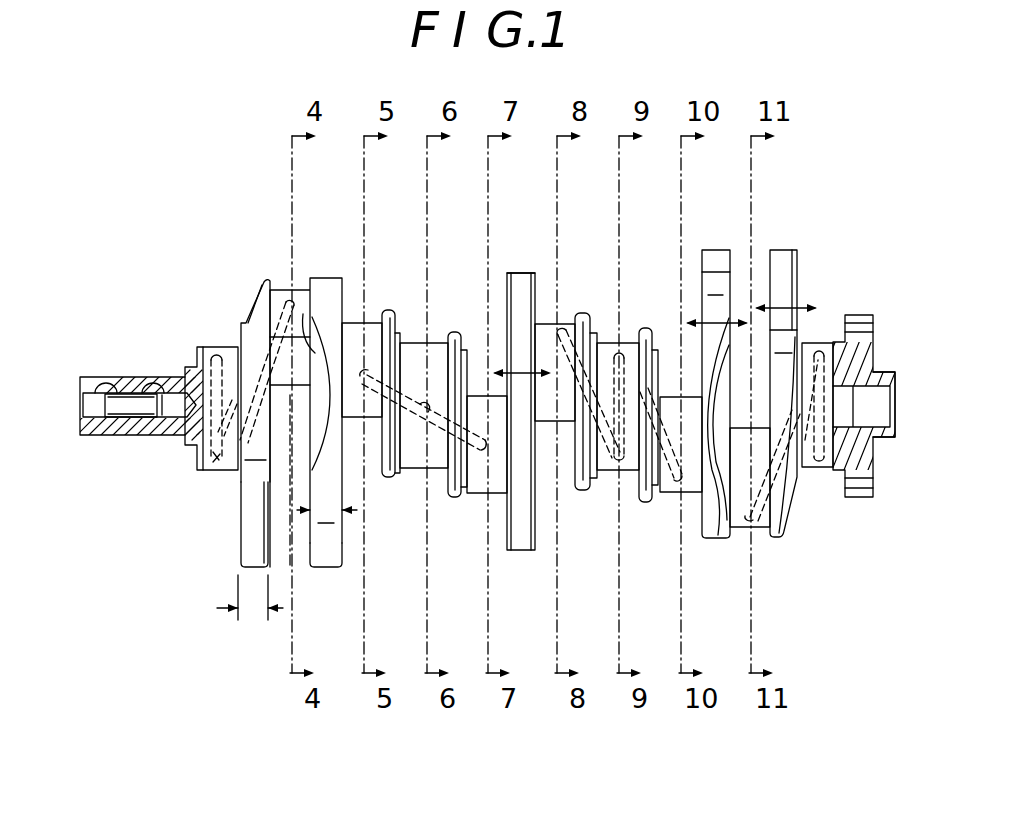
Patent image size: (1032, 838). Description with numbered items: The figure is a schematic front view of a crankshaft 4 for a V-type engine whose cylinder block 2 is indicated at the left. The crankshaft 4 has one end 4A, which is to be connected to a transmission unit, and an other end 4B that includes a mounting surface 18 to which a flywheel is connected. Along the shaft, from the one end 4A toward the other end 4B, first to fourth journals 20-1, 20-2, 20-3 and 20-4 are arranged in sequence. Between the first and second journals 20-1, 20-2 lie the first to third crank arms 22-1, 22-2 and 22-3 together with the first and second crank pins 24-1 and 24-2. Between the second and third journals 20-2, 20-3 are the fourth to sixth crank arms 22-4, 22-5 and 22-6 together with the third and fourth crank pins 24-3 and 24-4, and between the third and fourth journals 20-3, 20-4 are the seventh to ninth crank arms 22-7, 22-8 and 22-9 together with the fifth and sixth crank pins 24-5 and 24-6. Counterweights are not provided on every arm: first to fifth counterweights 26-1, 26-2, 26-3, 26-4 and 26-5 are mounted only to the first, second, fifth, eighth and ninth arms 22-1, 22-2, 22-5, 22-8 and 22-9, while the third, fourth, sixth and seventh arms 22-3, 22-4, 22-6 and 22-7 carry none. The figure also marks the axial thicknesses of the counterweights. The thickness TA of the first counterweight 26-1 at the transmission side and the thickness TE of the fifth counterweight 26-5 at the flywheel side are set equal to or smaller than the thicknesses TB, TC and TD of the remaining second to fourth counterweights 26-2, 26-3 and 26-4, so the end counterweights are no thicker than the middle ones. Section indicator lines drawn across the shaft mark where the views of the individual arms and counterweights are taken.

The cylinder block 2 is at (70, 405).
The crankshaft 4 is at (818, 104).
The one end 4A is at (148, 435).
The other end 4B is at (882, 444).
The mounting surface 18 is at (878, 340).
The first journal 20-1 is at (215, 344).
The second journal 20-2 is at (432, 342).
The third journal 20-3 is at (615, 342).
The fourth journal 20-4 is at (808, 470).
The first crank arm 22-1 is at (248, 445).
The second crank arm 22-2 is at (316, 278).
The third crank arm 22-3 is at (390, 480).
The fourth crank arm 22-4 is at (457, 510).
The fifth crank arm 22-5 is at (530, 560).
The sixth crank arm 22-6 is at (590, 492).
The seventh crank arm 22-7 is at (650, 505).
The eighth crank arm 22-8 is at (712, 540).
The ninth crank arm 22-9 is at (794, 340).
The first crank pin 24-1 is at (285, 297).
The second crank pin 24-2 is at (373, 322).
The third crank pin 24-3 is at (490, 500).
The fourth crank pin 24-4 is at (535, 272).
The fifth crank pin 24-5 is at (672, 396).
The sixth crank pin 24-6 is at (760, 530).
The first counterweight 26-1 is at (245, 531).
The second counterweight 26-2 is at (327, 567).
The third counterweight 26-3 is at (515, 272).
The fourth counterweight 26-4 is at (716, 250).
The fifth counterweight 26-5 is at (784, 250).
The thickness of first counterweight TA is at (250, 612).
The thickness of second counterweight TB is at (327, 499).
The thickness of third counterweight TC is at (532, 378).
The thickness of fourth counterweight TD is at (676, 330).
The thickness of fifth counterweight TE is at (810, 300).